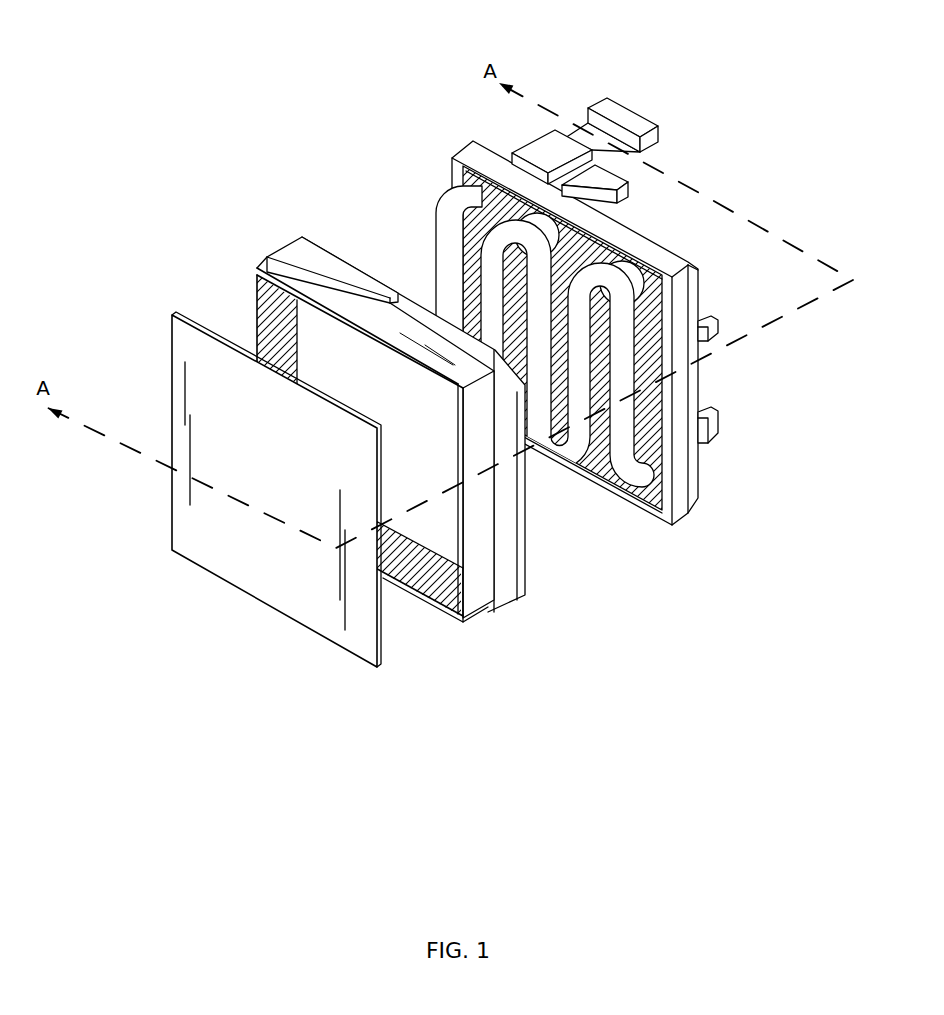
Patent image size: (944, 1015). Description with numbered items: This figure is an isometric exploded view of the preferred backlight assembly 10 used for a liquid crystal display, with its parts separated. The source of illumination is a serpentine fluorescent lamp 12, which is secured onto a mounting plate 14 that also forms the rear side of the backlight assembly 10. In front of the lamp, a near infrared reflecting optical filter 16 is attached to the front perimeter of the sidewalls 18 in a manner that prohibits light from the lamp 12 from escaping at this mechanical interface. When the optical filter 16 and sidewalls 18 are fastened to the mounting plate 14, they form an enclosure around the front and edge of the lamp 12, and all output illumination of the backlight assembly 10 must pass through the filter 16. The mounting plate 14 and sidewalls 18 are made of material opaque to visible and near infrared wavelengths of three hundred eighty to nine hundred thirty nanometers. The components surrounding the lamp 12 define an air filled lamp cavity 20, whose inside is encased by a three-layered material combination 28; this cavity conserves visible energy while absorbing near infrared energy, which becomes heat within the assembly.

The backlight assembly 10 is at (290, 124).
The serpentine fluorescent lamp 12 is at (622, 349).
The mounting plate 14 is at (682, 458).
The near infrared reflecting optical filter 16 is at (312, 597).
The sidewalls 18 is at (523, 543).
The lamp cavity 20 is at (433, 523).
The three-layered material combination 28 is at (268, 312).